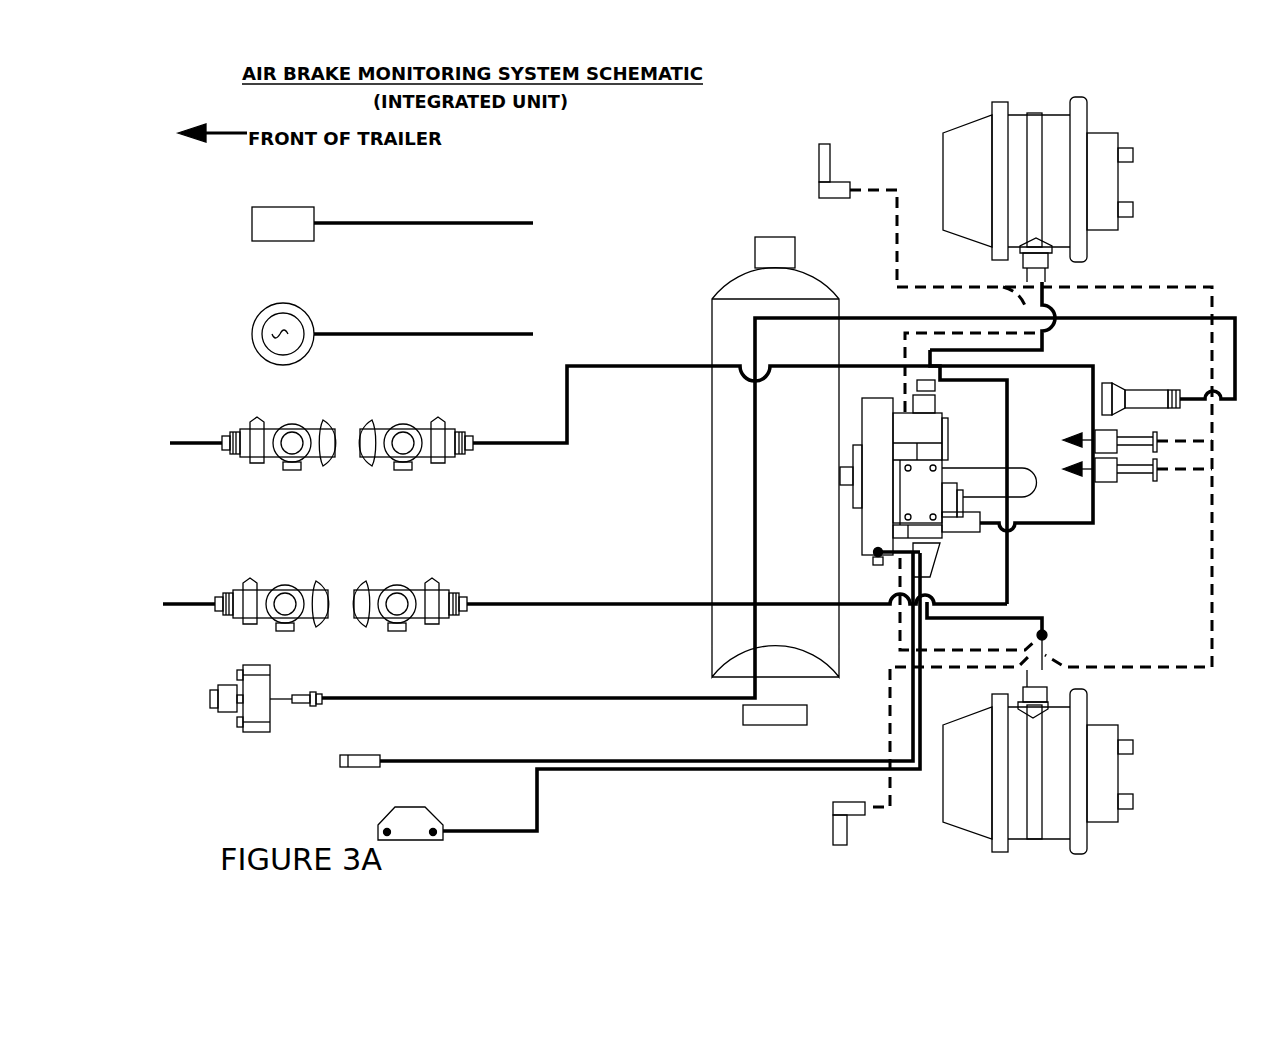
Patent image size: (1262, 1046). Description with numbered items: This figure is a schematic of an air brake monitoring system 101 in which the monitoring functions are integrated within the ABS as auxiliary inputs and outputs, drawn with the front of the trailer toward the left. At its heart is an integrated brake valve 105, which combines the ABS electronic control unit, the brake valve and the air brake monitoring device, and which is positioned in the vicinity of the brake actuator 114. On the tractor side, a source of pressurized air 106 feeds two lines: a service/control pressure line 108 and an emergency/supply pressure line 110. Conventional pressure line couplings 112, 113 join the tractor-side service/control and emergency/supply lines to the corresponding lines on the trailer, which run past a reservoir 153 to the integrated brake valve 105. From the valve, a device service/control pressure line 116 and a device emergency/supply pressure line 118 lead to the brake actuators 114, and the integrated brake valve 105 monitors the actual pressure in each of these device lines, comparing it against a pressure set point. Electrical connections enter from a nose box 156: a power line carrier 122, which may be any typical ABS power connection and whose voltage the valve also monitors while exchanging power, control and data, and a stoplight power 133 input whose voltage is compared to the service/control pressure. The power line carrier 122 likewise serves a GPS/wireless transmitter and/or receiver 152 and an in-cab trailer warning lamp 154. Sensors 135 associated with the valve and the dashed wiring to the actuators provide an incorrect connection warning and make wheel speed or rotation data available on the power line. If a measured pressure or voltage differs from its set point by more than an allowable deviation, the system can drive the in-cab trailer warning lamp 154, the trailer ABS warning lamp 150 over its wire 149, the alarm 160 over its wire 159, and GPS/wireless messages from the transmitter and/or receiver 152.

The air brake monitoring system 101 is at (700, 188).
The integrated brake valve 105 is at (873, 477).
The source of pressurized air 106 is at (250, 558).
The service/control pressure line 108 is at (171, 443).
The emergency/supply pressure line 110 is at (198, 604).
The pressure line coupling 112 is at (349, 441).
The pressure line coupling 113 is at (343, 602).
The brake actuator 114 is at (1000, 185).
The device service/control pressure line 116 is at (1045, 281).
The device emergency/supply pressure line 118 is at (1025, 674).
The power line carrier 122 is at (322, 690).
The stoplight power 133 is at (300, 704).
The incorrect connection warning 135 is at (833, 836).
The warning lamp wire 149 is at (497, 762).
The warning lamp 150 is at (342, 762).
The GPS/wireless transmitter and/or receiver 152 is at (267, 231).
The reservoir 153 is at (735, 312).
The in-cab trailer warning lamp 154 is at (264, 332).
The nose box 156 is at (225, 699).
The warning alarm wire 159 is at (516, 831).
The alarm 160 is at (410, 822).